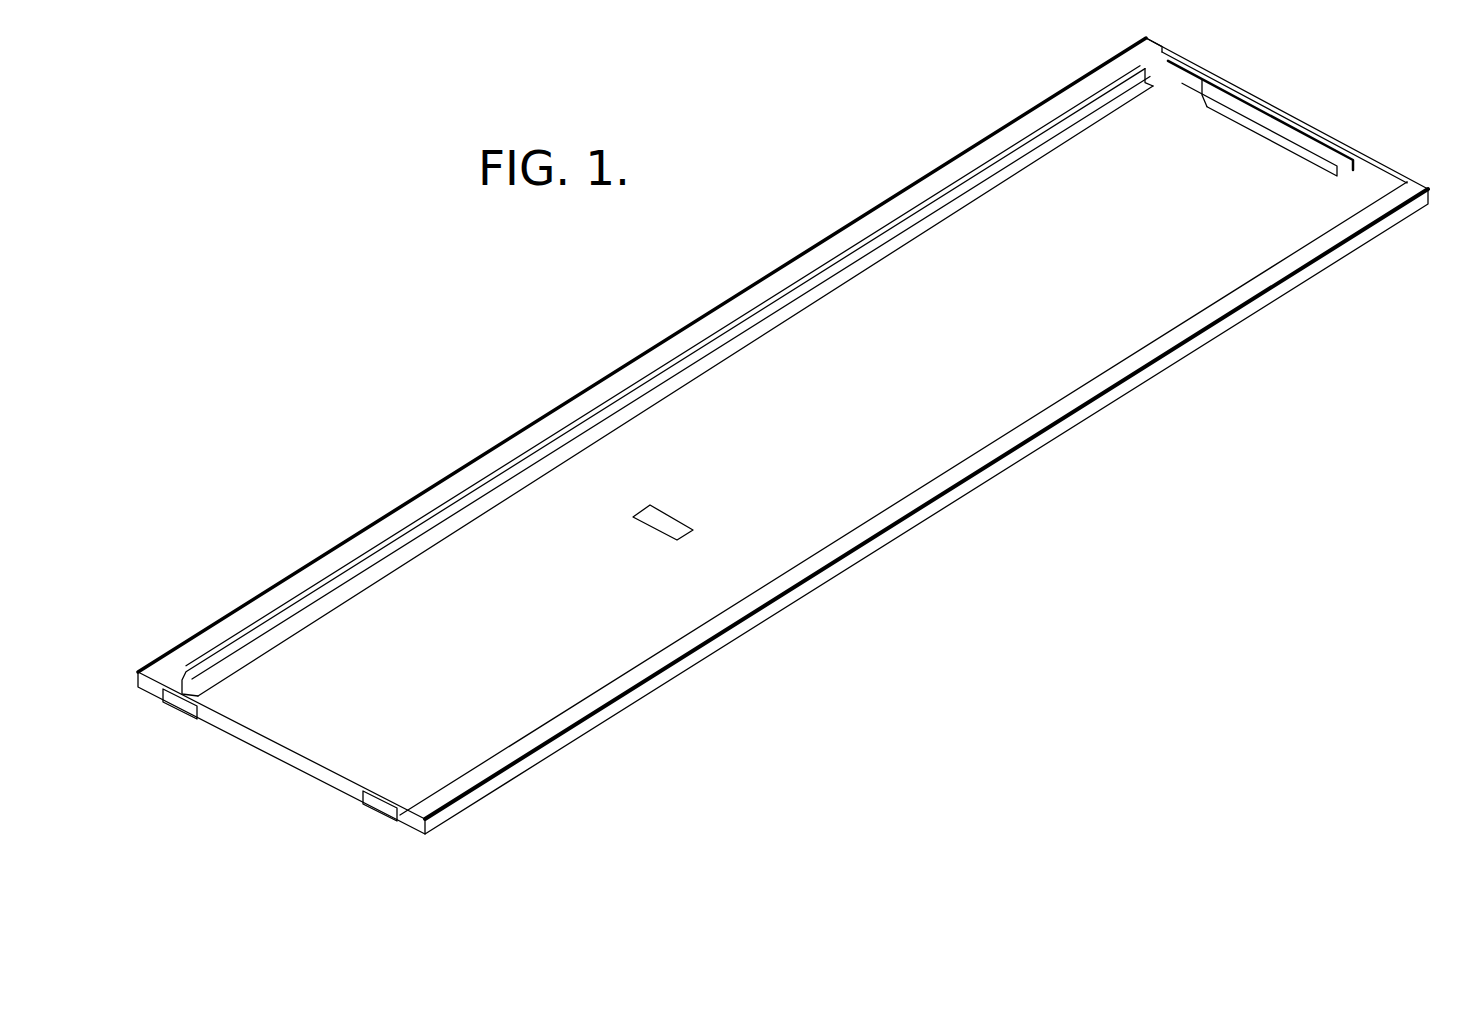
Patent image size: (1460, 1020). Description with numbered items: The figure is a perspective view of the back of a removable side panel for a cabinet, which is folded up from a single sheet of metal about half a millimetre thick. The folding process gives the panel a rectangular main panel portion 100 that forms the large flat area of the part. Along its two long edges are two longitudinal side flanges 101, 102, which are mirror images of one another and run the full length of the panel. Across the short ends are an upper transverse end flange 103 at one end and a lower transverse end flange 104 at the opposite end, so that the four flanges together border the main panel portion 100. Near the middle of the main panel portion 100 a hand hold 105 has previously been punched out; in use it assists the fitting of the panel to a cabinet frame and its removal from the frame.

The main panel portion 100 is at (850, 459).
The longitudinal side flange 101 is at (856, 238).
The longitudinal side flange 102 is at (1153, 349).
The upper transverse end flange 103 is at (1373, 158).
The lower transverse end flange 104 is at (310, 770).
The hand hold 105 is at (657, 520).